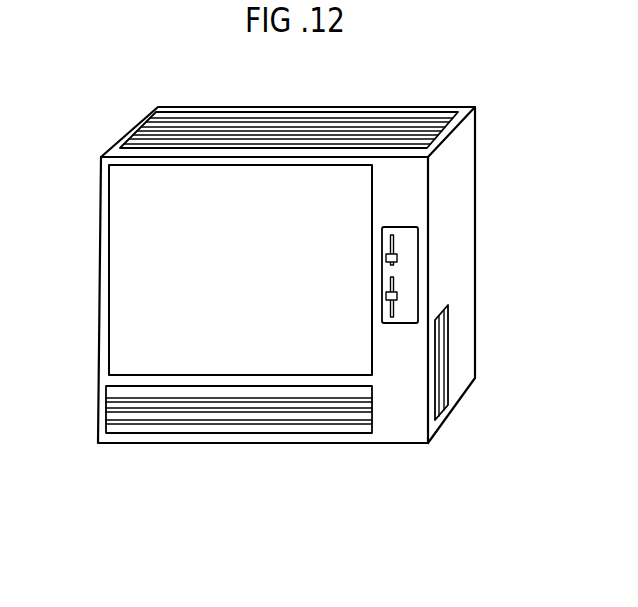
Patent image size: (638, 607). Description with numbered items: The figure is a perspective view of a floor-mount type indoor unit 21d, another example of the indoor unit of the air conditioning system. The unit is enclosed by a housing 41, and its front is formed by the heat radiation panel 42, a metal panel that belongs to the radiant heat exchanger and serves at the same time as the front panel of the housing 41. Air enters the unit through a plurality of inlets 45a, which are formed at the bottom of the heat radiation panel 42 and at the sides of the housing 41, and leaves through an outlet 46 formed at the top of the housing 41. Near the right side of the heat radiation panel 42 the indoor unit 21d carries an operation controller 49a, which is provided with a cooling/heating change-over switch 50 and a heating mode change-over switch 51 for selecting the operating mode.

The indoor unit 21d is at (485, 162).
The housing 41 is at (472, 254).
The heat radiation panel 42 is at (118, 272).
The outlet 46 is at (333, 128).
The inlets 45a is at (323, 427).
The operation controller 49a is at (413, 283).
The cooling/heating change-over switch 50 is at (387, 252).
The heating mode change-over switch 51 is at (388, 310).